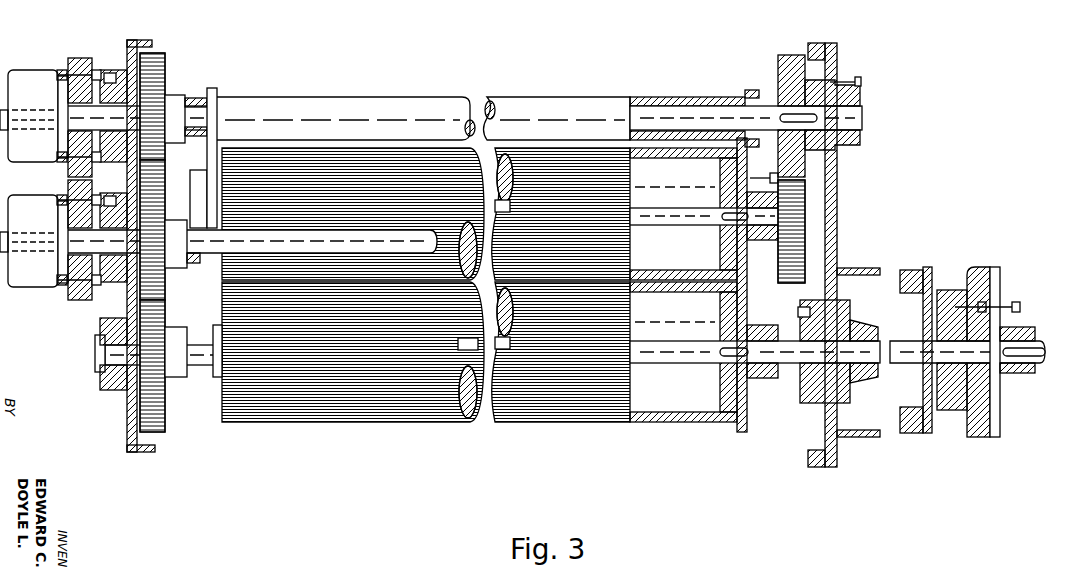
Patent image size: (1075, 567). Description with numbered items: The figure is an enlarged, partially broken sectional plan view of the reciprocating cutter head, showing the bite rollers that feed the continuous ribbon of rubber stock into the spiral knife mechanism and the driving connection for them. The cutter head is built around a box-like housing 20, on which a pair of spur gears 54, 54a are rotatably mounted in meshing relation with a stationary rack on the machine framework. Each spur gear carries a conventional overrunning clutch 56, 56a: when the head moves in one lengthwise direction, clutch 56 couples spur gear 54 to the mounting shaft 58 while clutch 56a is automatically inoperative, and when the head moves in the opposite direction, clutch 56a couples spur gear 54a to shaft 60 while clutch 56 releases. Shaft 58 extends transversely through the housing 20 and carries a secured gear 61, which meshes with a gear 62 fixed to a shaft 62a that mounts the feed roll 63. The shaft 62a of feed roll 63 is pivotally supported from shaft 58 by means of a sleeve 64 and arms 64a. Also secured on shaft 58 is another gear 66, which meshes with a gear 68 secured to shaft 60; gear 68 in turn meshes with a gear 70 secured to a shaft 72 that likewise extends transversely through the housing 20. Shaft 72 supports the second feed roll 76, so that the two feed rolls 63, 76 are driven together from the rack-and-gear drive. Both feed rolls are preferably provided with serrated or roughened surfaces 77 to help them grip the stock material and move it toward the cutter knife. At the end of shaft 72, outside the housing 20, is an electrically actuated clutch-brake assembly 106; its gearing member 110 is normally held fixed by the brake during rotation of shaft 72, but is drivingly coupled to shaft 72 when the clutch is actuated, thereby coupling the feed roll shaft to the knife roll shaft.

The box-like housing 20 is at (127, 430).
The spur gear 54 is at (80, 57).
The spur gear 54a is at (80, 297).
The overrunning clutch 56 is at (28, 74).
The overrunning clutch 56a is at (22, 285).
The mounting shaft 58 is at (97, 121).
The shaft 60 is at (95, 246).
The gear 61 is at (787, 63).
The gear 62 is at (777, 268).
The shaft 62a is at (690, 218).
The feed roll 63 is at (562, 160).
The sleeve 64 is at (537, 113).
The arms 64a is at (213, 93).
The gear 66 is at (157, 70).
The gear 68 is at (167, 185).
The gear 70 is at (167, 425).
The shaft 72 is at (203, 363).
The second feed roll 76 is at (322, 418).
The serrated or roughened surface 77 is at (557, 407).
The clutch-brake assembly 106 is at (1005, 280).
The gearing member 110 is at (862, 322).